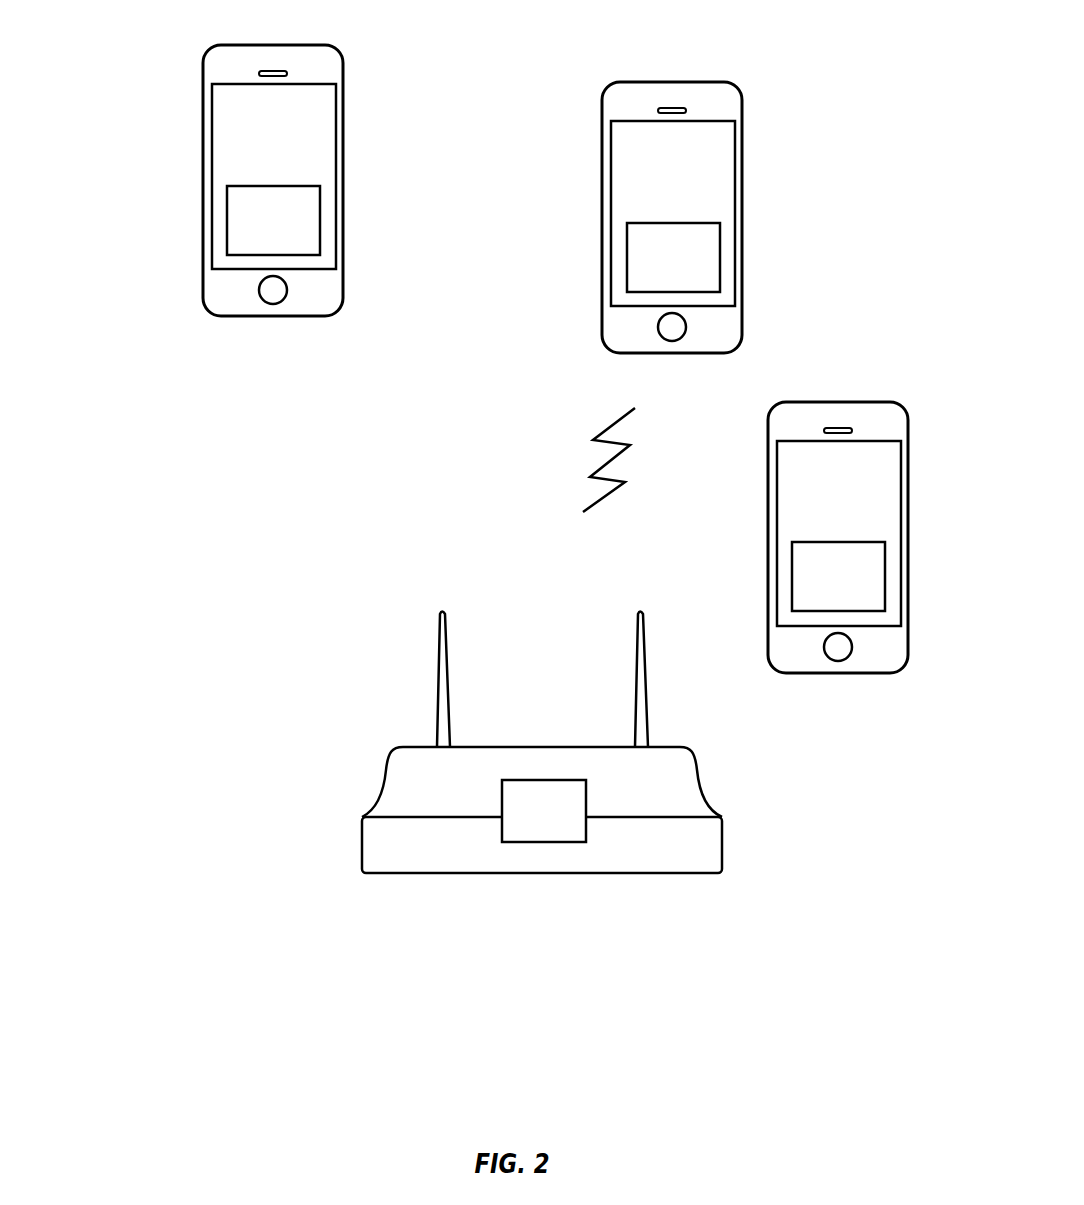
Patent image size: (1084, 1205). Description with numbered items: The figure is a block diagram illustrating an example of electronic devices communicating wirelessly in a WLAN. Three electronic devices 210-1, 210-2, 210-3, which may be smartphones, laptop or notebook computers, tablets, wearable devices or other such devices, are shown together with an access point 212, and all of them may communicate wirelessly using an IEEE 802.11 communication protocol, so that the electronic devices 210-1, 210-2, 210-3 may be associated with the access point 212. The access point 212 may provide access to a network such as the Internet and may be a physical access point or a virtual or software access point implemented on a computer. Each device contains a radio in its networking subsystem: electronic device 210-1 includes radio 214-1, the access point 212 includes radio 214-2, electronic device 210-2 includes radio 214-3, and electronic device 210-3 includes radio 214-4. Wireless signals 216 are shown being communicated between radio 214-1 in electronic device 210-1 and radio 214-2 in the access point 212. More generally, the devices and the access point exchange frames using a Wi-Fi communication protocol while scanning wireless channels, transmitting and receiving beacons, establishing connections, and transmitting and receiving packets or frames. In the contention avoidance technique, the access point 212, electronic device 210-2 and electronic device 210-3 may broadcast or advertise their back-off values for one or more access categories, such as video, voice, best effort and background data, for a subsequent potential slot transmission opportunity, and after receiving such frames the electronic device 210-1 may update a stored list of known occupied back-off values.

The electronic device 210-1 is at (750, 217).
The electronic device 210-2 is at (194, 180).
The electronic device 210-3 is at (864, 484).
The access point 212 is at (470, 743).
The radio 214-1 is at (648, 281).
The radio 214-2 is at (519, 834).
The radio 214-3 is at (248, 243).
The radio 214-4 is at (813, 599).
The wireless signals 216 is at (590, 477).